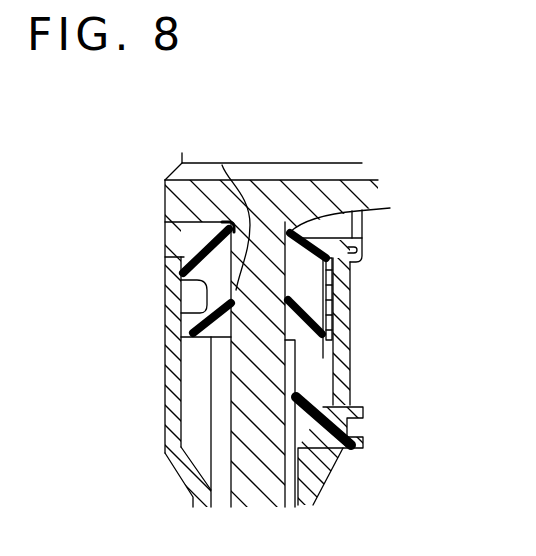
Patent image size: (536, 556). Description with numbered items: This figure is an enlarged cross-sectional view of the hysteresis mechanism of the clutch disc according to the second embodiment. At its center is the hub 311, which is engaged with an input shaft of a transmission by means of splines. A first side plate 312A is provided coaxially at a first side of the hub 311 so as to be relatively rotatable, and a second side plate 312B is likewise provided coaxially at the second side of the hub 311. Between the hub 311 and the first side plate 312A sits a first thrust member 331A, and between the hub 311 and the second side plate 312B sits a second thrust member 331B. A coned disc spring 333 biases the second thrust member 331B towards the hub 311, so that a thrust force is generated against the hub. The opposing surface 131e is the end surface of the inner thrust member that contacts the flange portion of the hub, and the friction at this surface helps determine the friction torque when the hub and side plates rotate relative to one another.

The opposing surface 131e is at (222, 165).
The hub 311 is at (267, 388).
The first thrust member 331A is at (177, 231).
The second thrust member 331B is at (358, 246).
The coned disc spring 333 is at (332, 322).
The first side plate 312A is at (163, 390).
The second side plate 312B is at (343, 473).